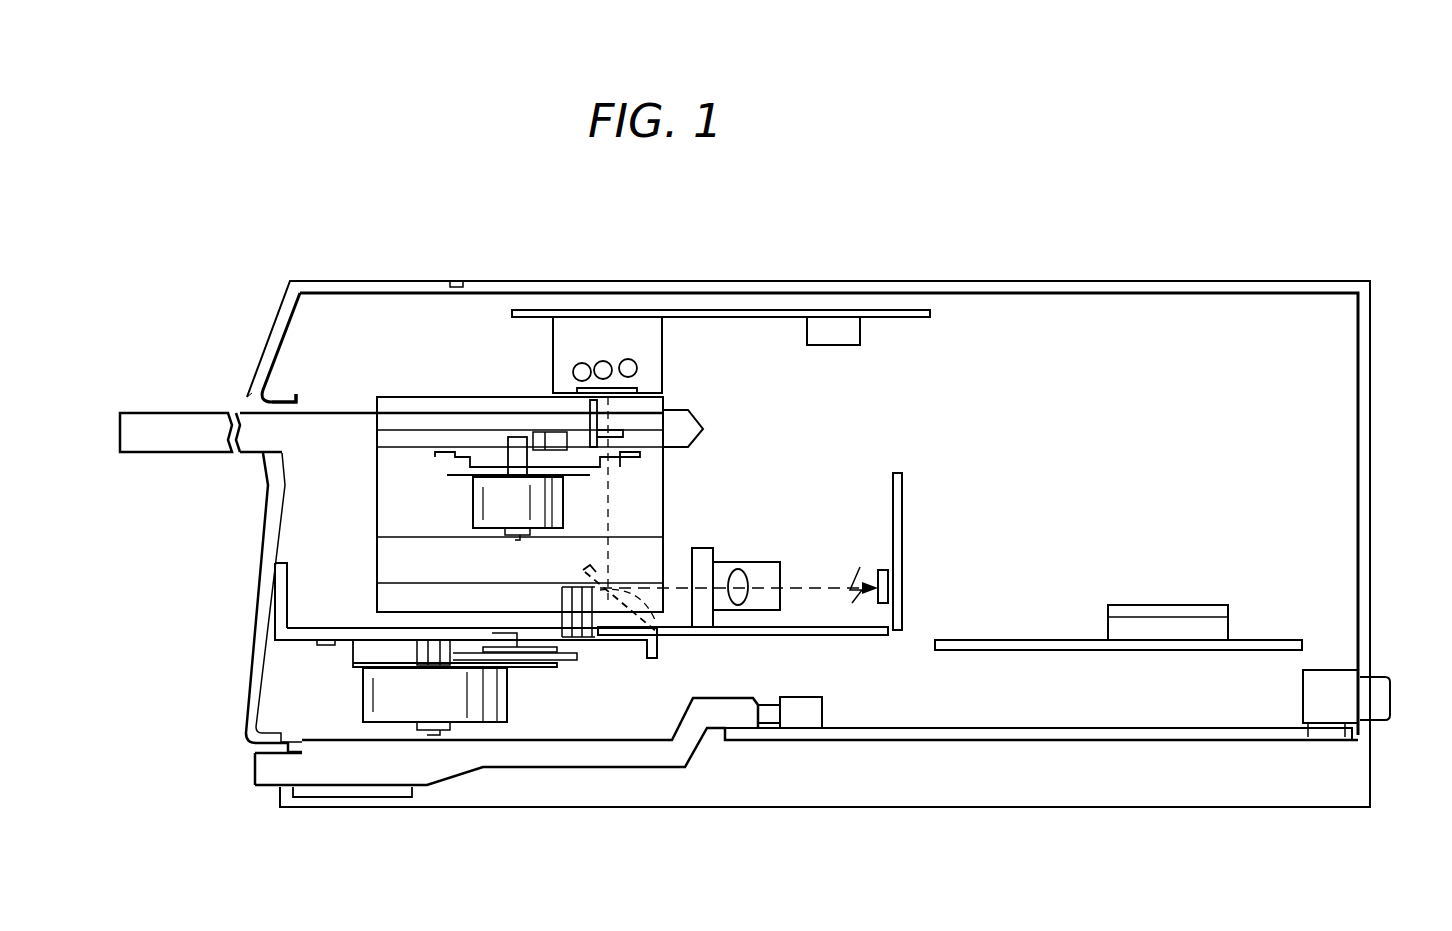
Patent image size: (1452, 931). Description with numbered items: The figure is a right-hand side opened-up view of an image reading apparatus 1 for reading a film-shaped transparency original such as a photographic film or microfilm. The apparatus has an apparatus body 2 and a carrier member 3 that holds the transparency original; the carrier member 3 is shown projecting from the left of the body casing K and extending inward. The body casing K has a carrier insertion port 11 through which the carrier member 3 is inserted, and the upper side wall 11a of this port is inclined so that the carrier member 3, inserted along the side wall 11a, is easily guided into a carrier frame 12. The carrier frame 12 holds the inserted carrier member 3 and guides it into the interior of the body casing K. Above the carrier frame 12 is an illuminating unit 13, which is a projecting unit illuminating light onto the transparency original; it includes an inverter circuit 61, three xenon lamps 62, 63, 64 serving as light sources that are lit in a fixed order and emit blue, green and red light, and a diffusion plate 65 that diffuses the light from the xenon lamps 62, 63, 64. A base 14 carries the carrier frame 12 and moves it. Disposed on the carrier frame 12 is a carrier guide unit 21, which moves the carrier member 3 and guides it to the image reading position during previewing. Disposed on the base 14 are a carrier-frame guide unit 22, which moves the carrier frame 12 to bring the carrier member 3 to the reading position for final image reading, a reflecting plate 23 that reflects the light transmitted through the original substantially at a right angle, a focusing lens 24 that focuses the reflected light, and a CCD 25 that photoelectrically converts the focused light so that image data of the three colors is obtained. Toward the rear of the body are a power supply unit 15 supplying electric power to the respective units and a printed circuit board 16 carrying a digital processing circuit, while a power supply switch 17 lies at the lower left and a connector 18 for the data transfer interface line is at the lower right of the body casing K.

The image reading apparatus 1 is at (942, 158).
The body casing K is at (1035, 280).
The apparatus body 2 is at (1160, 305).
The carrier member 3 is at (168, 413).
The carrier insertion port 11 is at (244, 394).
The upper side wall 11a is at (276, 402).
The carrier frame 12 is at (377, 517).
The illuminating unit 13 is at (722, 340).
The base 14 is at (275, 618).
The power supply unit 15 is at (1230, 624).
The printed circuit board 16 is at (1228, 730).
The power supply switch 17 is at (255, 768).
The connector 18 is at (1392, 720).
The carrier guide unit 21 is at (415, 474).
The carrier-frame guide unit 22 is at (540, 695).
The reflecting plate 23 is at (665, 640).
The focusing lens 24 is at (736, 570).
The CCD 25 is at (880, 577).
The inverter circuit 61 is at (820, 325).
The xenon lamp 62 is at (584, 362).
The xenon lamp 63 is at (602, 361).
The xenon lamp 64 is at (630, 359).
The diffusion plate 65 is at (640, 388).